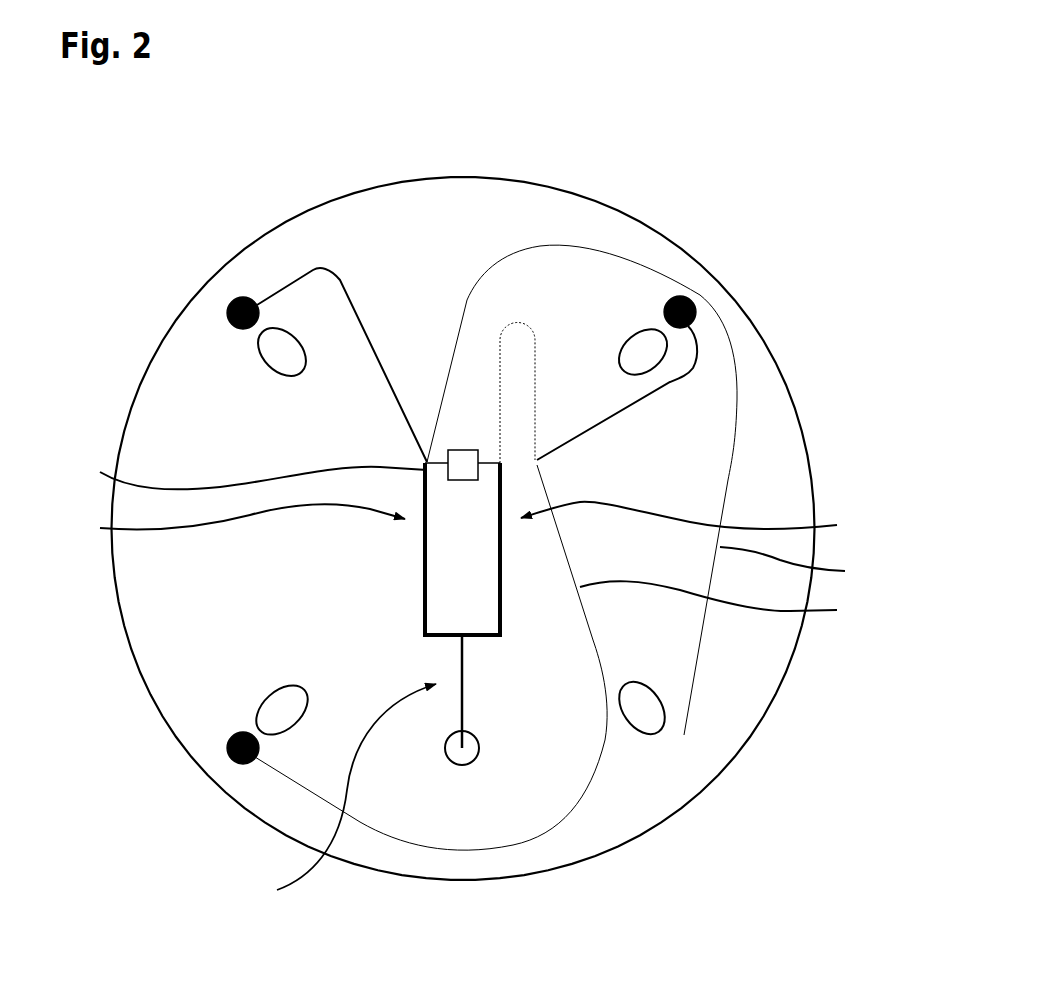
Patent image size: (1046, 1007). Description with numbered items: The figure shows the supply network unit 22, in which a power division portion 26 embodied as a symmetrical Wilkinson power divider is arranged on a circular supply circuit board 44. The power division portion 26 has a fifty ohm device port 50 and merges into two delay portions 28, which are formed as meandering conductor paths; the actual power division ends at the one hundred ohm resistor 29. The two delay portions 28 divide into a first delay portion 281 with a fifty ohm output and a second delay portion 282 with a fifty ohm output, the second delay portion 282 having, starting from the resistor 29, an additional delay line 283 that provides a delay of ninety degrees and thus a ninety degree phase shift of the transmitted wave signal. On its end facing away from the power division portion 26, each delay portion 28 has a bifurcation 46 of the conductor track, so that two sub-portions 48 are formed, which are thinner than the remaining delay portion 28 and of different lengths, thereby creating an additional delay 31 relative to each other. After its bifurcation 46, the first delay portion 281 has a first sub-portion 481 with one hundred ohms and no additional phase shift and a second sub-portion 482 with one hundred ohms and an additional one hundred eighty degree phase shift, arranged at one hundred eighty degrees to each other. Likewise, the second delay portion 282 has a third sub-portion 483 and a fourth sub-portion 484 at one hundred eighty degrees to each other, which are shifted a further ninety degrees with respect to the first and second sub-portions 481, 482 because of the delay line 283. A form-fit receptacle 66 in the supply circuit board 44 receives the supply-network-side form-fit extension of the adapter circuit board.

The supply network unit 22 is at (713, 281).
The power division portion 26 is at (339, 795).
The delay portions 28 is at (465, 522).
The first delay portion 281 is at (100, 528).
The second delay portion 282 is at (723, 521).
The additional delay line 283 is at (537, 367).
The resistor 29 is at (100, 472).
The additional delay 31 is at (737, 585).
The supply circuit board 44 is at (407, 200).
The bifurcation 46 is at (428, 462).
The sub-portions 48 is at (491, 489).
The first sub-portion 481 is at (304, 259).
The second sub-portion 482 is at (556, 234).
The third sub-portion 483 is at (713, 328).
The fourth sub-portion 484 is at (281, 798).
The device port 50 is at (465, 708).
The form-fit receptacle 66 is at (657, 695).